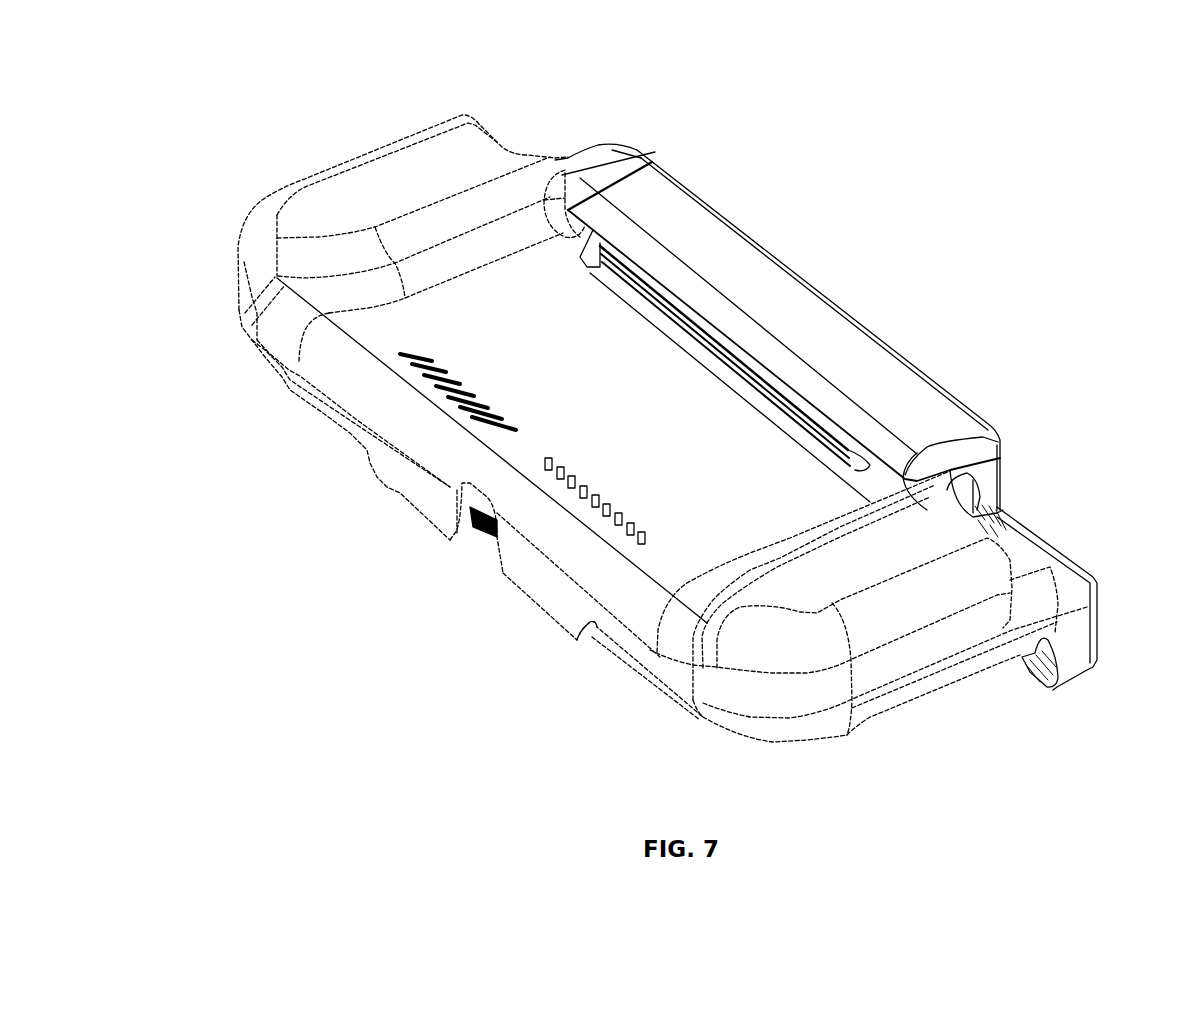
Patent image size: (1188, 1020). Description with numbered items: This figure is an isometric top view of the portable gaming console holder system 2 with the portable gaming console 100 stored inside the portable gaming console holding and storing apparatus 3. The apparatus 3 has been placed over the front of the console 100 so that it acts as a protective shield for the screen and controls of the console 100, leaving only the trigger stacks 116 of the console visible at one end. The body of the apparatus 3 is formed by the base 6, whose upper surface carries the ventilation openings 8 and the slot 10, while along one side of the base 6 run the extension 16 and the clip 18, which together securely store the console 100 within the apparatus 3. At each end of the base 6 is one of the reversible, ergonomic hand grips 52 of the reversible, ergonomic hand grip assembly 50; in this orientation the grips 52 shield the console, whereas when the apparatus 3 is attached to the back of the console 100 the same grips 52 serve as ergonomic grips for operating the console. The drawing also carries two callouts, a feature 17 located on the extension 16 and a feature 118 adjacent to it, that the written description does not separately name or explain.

The portable gaming console holder system 2 is at (817, 223).
The portable gaming console holding and storing apparatus 3 is at (227, 235).
The base 6 is at (632, 411).
The ventilation openings 8 is at (478, 402).
The slot 10 is at (733, 395).
The extension 16 is at (410, 490).
The latch tab 17 is at (443, 550).
The clip 18 is at (577, 650).
The reversible, ergonomic hand grip assembly 50 is at (1063, 500).
The reversible, ergonomic hand grips 52 is at (385, 175).
The portable gaming console 100 is at (933, 343).
The trigger stacks 116 is at (1072, 643).
The latch recess 118 is at (493, 527).